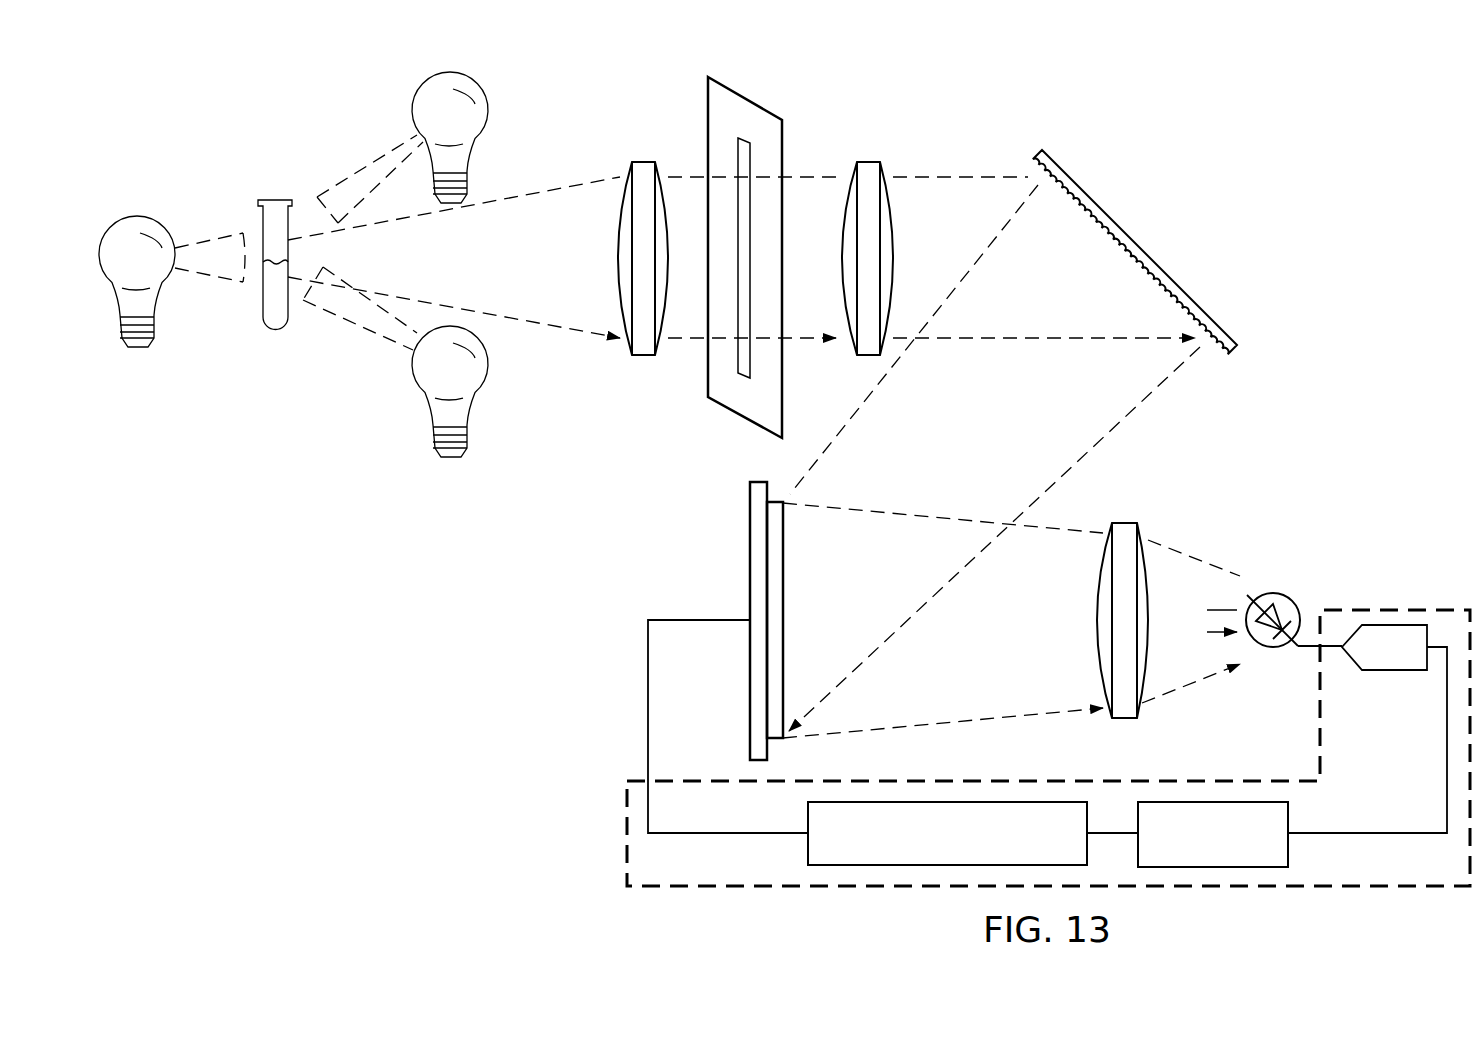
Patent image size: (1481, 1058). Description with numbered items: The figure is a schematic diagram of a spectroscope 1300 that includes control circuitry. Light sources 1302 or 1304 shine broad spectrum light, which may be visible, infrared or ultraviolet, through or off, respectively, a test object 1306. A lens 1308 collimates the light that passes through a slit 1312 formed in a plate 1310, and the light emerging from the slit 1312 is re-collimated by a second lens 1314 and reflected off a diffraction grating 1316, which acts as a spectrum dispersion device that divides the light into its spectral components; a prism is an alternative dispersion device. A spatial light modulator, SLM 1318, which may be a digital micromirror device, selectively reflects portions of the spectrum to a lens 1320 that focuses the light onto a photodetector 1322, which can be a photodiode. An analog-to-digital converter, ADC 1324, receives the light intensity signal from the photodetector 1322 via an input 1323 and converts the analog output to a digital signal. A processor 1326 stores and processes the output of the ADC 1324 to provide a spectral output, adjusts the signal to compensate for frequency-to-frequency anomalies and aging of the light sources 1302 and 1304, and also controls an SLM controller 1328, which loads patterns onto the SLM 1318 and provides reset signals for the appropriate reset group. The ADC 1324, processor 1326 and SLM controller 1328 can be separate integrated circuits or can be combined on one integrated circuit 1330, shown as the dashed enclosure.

The spectroscope 1300 is at (1293, 185).
The light source 1302 is at (138, 220).
The light source 1304 is at (489, 106).
The test object 1306 is at (275, 200).
The lens 1308 is at (642, 162).
The plate 1310 is at (773, 112).
The slit 1312 is at (742, 138).
The lens 1314 is at (867, 162).
The diffraction grating 1316 is at (1142, 248).
The spatial light modulator 1318 is at (749, 688).
The lens 1320 is at (1122, 720).
The photodetector 1322 is at (1273, 593).
The input 1323 is at (1311, 655).
The analog-to-digital converter 1324 is at (1397, 670).
The processor 1326 is at (1288, 842).
The spatial light modulator controller 1328 is at (808, 842).
The combined integrated circuit 1330 is at (624, 861).